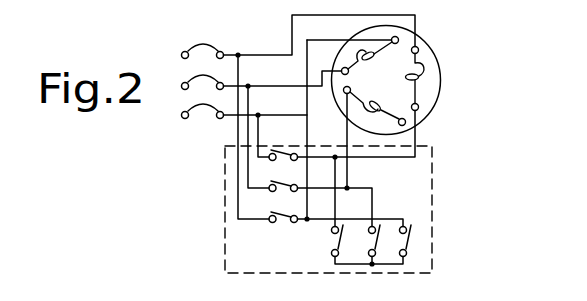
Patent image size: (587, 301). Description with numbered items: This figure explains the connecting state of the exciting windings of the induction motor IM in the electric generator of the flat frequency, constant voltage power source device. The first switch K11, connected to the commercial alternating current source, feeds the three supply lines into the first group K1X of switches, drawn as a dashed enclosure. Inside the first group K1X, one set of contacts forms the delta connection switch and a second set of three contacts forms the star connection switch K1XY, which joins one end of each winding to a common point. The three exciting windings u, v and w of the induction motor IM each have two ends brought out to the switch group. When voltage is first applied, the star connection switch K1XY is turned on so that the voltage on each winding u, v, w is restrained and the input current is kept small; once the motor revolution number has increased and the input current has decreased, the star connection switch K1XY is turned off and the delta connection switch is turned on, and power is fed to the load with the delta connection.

The first switch K11 is at (205, 68).
The first group of switches K1X is at (433, 178).
The star connection switch K1XY is at (412, 241).
The induction motor IM is at (386, 80).
The exciting winding u is at (370, 57).
The exciting winding v is at (407, 116).
The exciting winding w is at (421, 74).